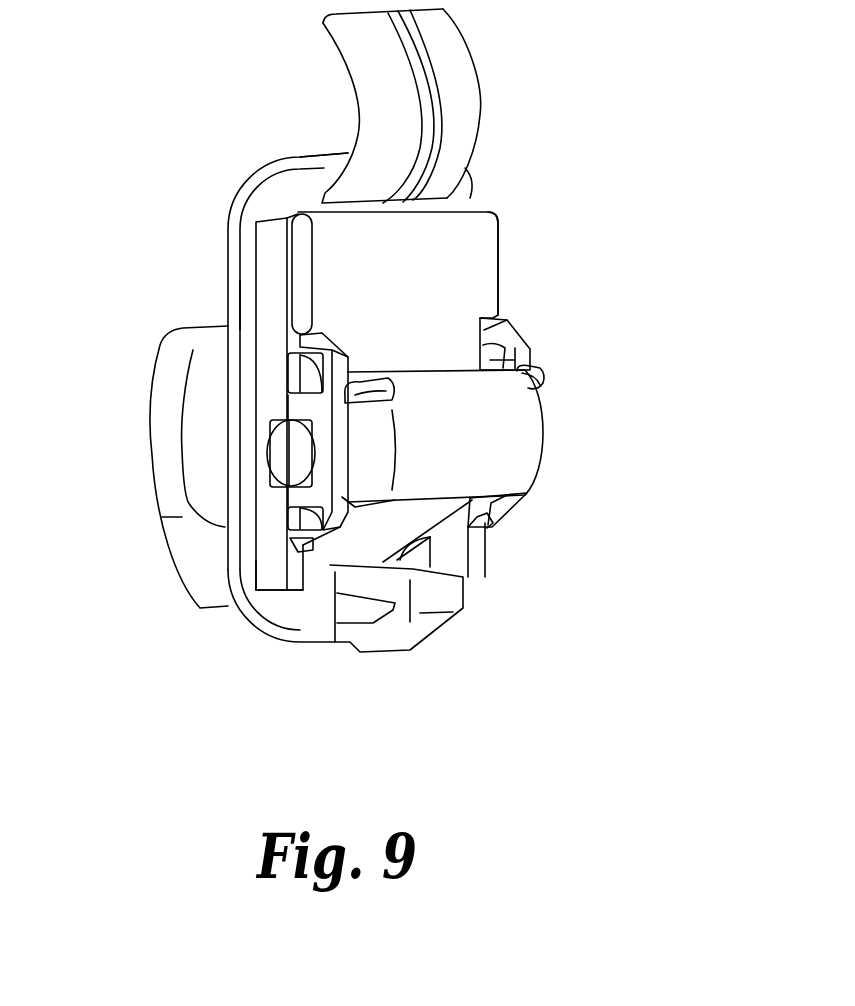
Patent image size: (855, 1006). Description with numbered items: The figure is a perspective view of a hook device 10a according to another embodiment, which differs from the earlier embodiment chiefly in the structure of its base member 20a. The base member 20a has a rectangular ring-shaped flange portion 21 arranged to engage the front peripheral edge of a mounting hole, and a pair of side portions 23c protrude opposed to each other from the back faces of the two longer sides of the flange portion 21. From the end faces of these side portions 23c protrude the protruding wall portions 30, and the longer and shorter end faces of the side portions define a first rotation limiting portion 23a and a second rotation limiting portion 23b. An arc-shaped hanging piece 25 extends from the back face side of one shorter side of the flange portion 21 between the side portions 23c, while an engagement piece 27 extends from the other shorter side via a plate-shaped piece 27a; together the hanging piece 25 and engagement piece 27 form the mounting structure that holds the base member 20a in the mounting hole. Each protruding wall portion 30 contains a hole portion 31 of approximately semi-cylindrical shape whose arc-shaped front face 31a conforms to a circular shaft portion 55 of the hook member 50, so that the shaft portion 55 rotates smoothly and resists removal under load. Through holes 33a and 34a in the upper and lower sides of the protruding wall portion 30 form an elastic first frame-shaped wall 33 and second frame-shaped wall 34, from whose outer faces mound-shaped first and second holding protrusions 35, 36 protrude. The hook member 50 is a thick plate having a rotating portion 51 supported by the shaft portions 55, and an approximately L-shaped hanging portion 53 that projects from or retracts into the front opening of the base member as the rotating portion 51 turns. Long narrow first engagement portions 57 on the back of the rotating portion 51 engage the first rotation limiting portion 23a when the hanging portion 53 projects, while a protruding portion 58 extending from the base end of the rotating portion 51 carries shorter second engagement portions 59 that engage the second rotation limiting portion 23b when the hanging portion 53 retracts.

The hook device 10a is at (190, 5).
The base member 20a is at (260, 158).
The flange portion 21 is at (297, 165).
The first rotation limiting portion 23a is at (288, 262).
The second rotation limiting portion 23b is at (291, 588).
The side portion 23c is at (270, 303).
The hanging piece 25 is at (463, 52).
The engagement piece 27 is at (396, 636).
The plate-shaped piece 27a is at (343, 580).
The protruding wall portion 30 is at (352, 353).
The hole portion 31 is at (182, 460).
The front face 31a is at (191, 456).
The first frame-shaped wall 33 is at (379, 330).
The through hole 33a is at (497, 360).
The second frame-shaped wall 34 is at (313, 470).
The through hole 34a is at (182, 453).
The first holding protrusion 35 is at (515, 330).
The second holding protrusion 36 is at (295, 553).
The hook member 50 is at (313, 247).
The rotating portion 51 is at (415, 245).
The hanging portion 53 is at (170, 368).
The shaft portion 55 is at (285, 497).
The first engagement portion 57 is at (297, 233).
The protruding portion 58 is at (501, 432).
The second engagement portion 59 is at (545, 374).